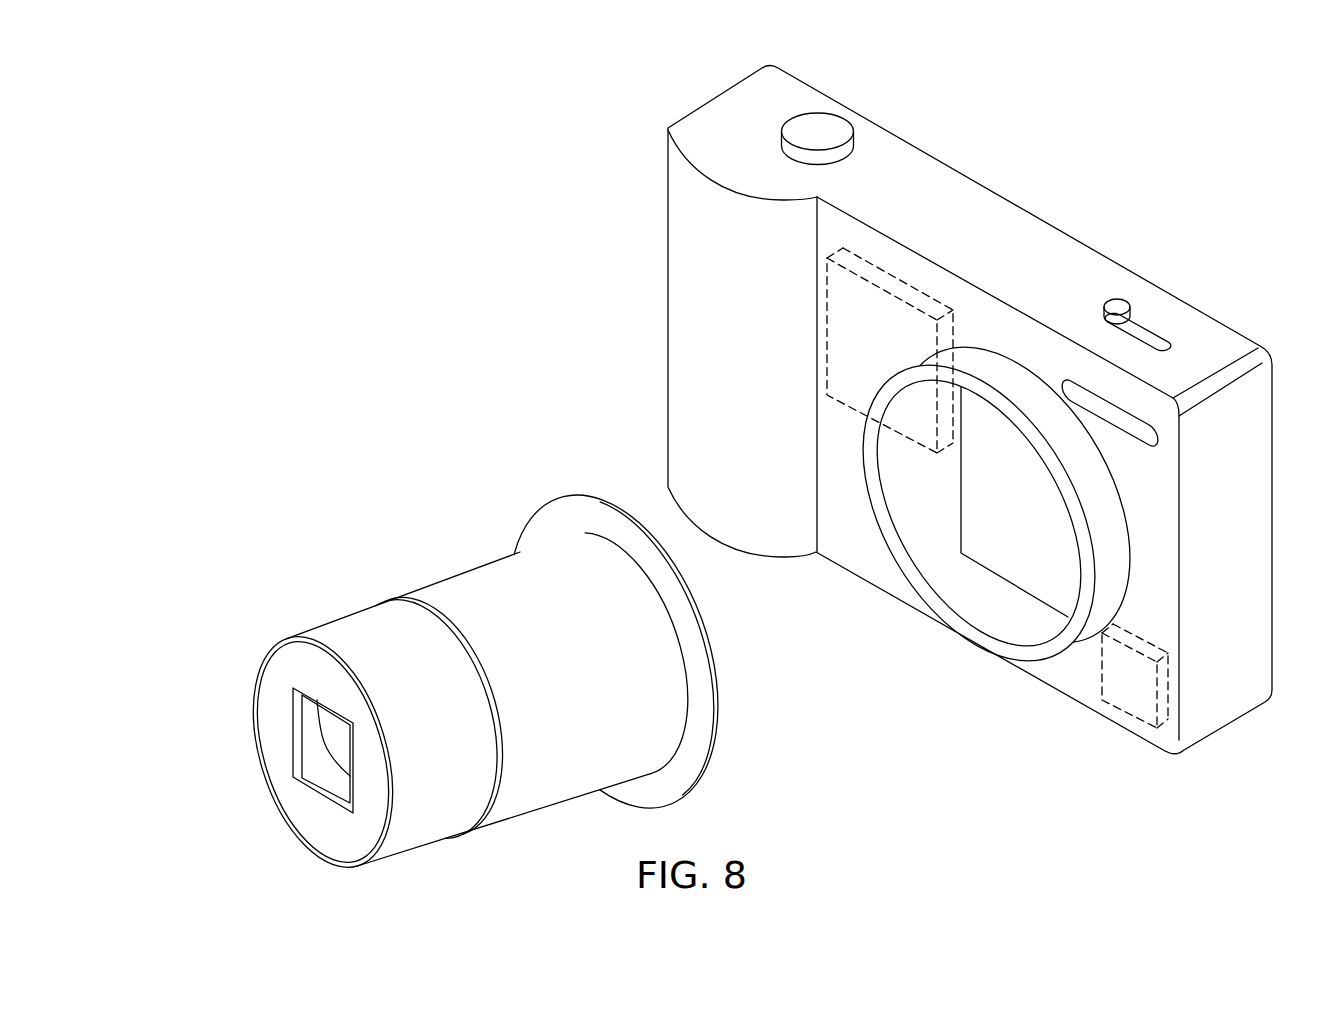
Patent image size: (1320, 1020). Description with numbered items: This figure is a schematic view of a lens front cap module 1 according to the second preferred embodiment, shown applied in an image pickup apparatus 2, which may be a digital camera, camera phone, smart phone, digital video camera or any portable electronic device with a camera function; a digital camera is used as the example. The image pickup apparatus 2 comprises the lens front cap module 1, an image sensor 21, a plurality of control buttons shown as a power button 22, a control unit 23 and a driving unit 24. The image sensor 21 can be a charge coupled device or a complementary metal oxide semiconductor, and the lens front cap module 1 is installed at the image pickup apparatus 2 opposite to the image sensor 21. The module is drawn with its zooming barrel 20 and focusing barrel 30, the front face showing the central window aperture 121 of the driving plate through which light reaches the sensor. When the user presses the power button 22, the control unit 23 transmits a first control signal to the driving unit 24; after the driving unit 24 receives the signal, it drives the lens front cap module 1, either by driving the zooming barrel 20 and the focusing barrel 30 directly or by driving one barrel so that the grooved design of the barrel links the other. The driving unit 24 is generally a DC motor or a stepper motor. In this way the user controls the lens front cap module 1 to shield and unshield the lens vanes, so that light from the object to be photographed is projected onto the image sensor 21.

The lens front cap module 1 is at (384, 520).
The image pickup apparatus 2 is at (400, 183).
The zooming barrel 20 is at (380, 649).
The central window aperture 121 is at (300, 770).
The focusing barrel 30 is at (512, 778).
The image sensor 21 is at (1000, 550).
The power button 22 is at (821, 132).
The control unit 23 is at (888, 272).
The driving unit 24 is at (1142, 695).